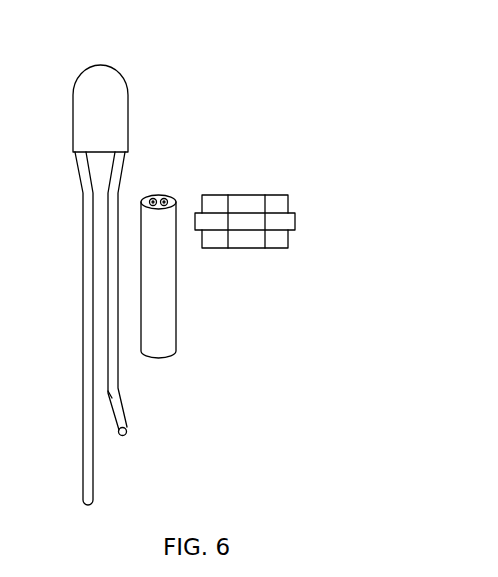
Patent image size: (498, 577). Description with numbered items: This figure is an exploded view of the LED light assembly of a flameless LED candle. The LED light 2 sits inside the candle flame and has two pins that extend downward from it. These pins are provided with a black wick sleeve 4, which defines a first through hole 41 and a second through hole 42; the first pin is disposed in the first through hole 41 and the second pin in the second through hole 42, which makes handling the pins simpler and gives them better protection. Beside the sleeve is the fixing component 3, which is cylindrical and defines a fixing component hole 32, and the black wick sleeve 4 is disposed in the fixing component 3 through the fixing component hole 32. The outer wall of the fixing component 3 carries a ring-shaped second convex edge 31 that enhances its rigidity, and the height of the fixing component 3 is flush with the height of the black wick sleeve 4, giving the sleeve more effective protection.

The LED light 2 is at (102, 118).
The black wick sleeve 4 is at (215, 210).
The first through hole 41 is at (153, 198).
The second through hole 42 is at (173, 197).
The fixing component 3 is at (265, 227).
The second convex edge 31 is at (292, 228).
The fixing component hole 32 is at (242, 238).